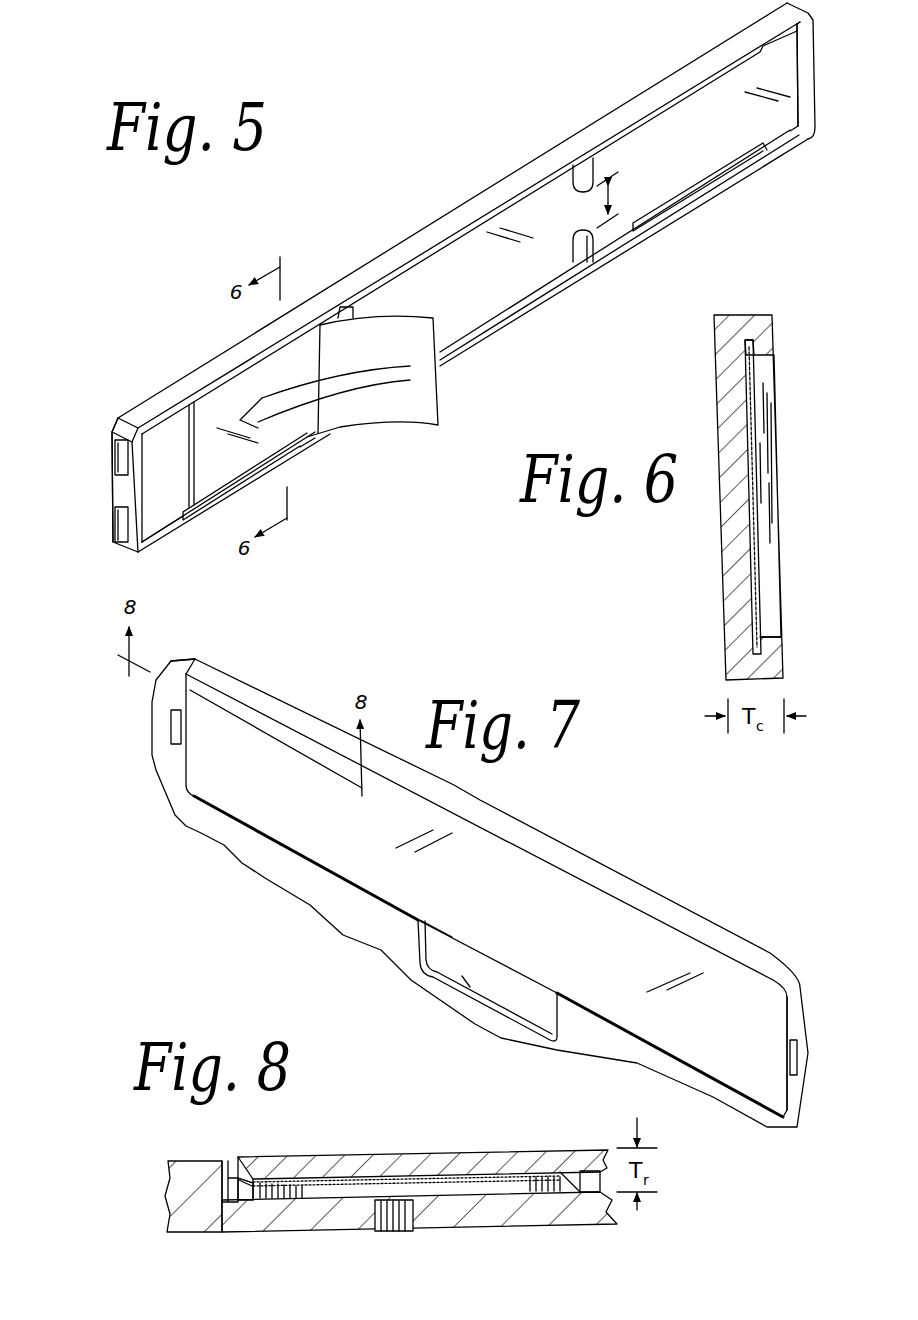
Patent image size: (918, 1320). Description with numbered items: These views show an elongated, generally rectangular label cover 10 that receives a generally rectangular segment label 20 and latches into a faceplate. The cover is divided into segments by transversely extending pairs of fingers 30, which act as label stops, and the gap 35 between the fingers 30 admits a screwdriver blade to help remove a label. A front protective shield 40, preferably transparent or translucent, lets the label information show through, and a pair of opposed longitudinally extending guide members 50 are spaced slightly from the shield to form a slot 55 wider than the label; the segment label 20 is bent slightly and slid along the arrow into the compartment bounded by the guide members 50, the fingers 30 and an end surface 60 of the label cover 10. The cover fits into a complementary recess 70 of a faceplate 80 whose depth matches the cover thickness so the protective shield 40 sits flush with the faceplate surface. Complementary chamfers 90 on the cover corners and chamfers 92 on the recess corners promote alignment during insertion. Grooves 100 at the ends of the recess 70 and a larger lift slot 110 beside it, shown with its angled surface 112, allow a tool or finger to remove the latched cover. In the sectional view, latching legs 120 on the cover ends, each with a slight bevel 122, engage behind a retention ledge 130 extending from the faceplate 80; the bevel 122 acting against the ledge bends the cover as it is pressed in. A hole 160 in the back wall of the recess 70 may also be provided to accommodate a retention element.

In FIG. 5, the label cover 10 is at (636, 47).
In FIG. 5, the segment label 20 is at (397, 407).
In FIG. 6, the segment label 20 is at (758, 533).
In FIG. 8, the segment label 20 is at (498, 1173).
In FIG. 5, the fingers 30 is at (593, 178).
In FIG. 8, the fingers 30 is at (570, 1186).
In FIG. 5, the gap 35 is at (610, 200).
In FIG. 5, the protective shield 40 is at (700, 157).
In FIG. 6, the protective shield 40 is at (731, 568).
In FIG. 7, the protective shield 40 is at (587, 907).
In FIG. 8, the protective shield 40 is at (362, 1155).
In FIG. 6, the guide members 50 is at (777, 647).
In FIG. 8, the guide members 50 is at (443, 1185).
In FIG. 6, the slot 55 is at (752, 362).
In FIG. 5, the end surface 60 is at (793, 110).
In FIG. 6, the end surface 60 is at (772, 478).
In FIG. 8, the end surface 60 is at (262, 1198).
In FIG. 7, the recess 70 is at (687, 933).
In FIG. 8, the recess 70 is at (590, 1176).
In FIG. 7, the faceplate 80 is at (265, 867).
In FIG. 8, the faceplate 80 is at (188, 1159).
In FIG. 5, the chamfer 90 is at (117, 420).
In FIG. 7, the chamfer 90 is at (201, 682).
In FIG. 7, the chamfer 92 is at (186, 676).
In FIG. 7, the groove 100 is at (171, 727).
In FIG. 7, the lift slot 110 is at (448, 968).
In FIG. 7, the notch wall 112 is at (493, 982).
In FIG. 5, the latching leg 120 is at (115, 476).
In FIG. 8, the latching leg 120 is at (247, 1191).
In FIG. 8, the bevel 122 is at (250, 1192).
In FIG. 8, the retention ledge 130 is at (227, 1160).
In FIG. 8, the hole 160 is at (395, 1218).